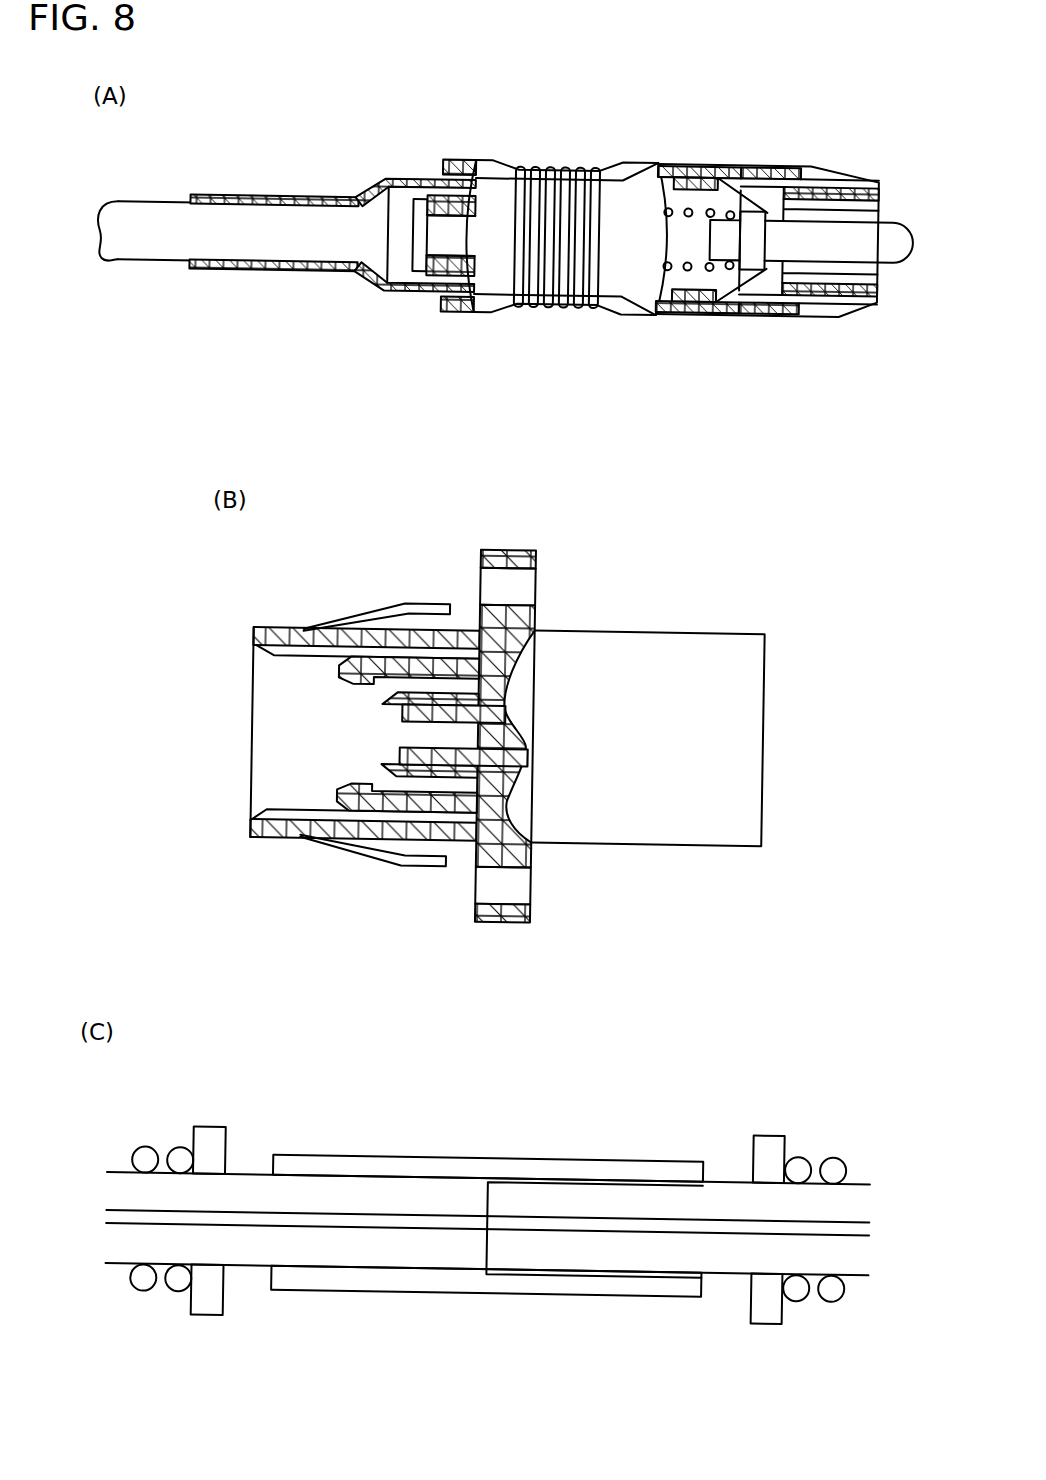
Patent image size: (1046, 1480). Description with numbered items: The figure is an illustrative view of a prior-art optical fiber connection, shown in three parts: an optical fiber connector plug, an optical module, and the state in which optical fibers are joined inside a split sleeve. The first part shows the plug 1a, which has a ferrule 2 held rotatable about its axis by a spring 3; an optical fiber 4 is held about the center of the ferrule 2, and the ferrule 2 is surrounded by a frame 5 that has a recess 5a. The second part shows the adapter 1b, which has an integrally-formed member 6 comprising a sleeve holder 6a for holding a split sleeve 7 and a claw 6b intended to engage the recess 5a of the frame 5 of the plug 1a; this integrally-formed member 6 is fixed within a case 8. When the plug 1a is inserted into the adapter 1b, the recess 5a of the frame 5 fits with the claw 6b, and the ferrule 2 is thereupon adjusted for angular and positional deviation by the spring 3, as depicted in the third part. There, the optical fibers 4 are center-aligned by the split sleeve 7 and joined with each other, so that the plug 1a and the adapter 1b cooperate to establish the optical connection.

The plug 1a is at (379, 164).
The adapter 1b is at (619, 617).
The ferrule 2 is at (787, 238).
The spring 3 is at (692, 282).
The optical fiber 4 is at (255, 1218).
The frame 5 is at (862, 190).
The recess 5a is at (821, 185).
The integrally-formed member 6 is at (376, 775).
The sleeve holder 6a is at (380, 700).
The claw 6b is at (345, 670).
The split sleeve 7 is at (433, 748).
The case 8 is at (697, 648).